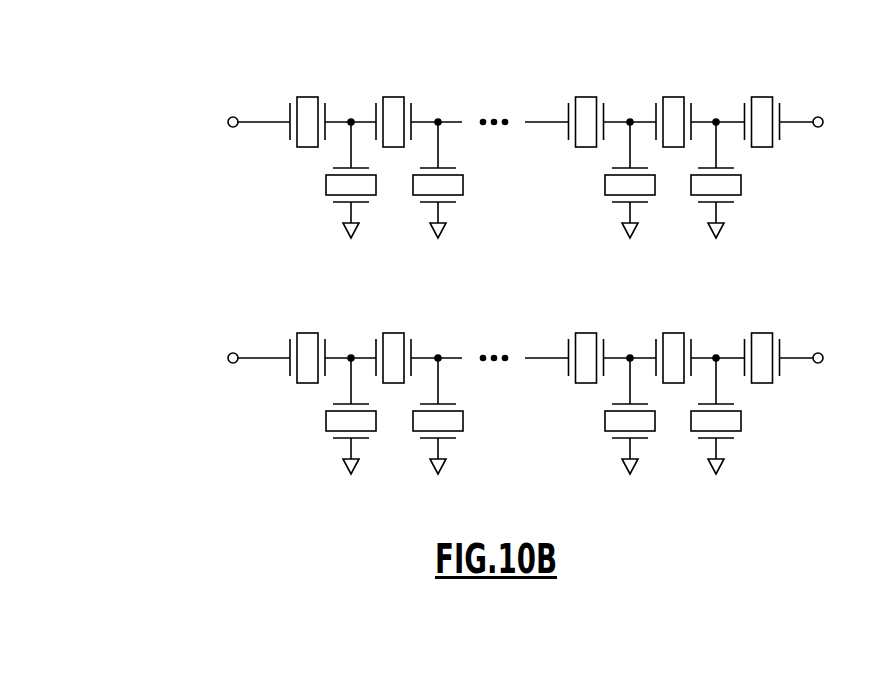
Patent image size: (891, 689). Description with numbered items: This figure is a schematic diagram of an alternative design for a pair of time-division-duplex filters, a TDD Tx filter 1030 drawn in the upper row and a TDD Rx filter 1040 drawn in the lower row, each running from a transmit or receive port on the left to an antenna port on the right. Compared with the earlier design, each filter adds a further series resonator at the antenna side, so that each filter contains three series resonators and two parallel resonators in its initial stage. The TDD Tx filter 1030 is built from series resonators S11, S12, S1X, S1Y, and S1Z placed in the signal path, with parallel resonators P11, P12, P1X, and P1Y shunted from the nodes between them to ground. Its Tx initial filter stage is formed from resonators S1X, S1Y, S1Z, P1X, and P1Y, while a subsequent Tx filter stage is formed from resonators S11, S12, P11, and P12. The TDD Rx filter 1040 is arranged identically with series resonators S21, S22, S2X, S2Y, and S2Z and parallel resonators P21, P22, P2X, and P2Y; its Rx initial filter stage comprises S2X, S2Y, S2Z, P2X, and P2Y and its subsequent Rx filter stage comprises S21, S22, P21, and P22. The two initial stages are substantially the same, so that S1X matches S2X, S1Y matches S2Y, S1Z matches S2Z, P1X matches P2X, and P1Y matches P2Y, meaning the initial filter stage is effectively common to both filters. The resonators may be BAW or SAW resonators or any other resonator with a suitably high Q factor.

The TDD Tx filter 1030 is at (470, 135).
The TDD Rx filter 1040 is at (470, 371).
The series resonator S11 is at (308, 105).
The series resonator S12 is at (393, 105).
The series resonator S1X is at (585, 105).
The series resonator S1Y is at (673, 105).
The series resonator S1Z is at (762, 105).
The series resonator S21 is at (308, 341).
The series resonator S22 is at (393, 341).
The series resonator S2X is at (585, 341).
The series resonator S2Y is at (673, 341).
The series resonator S2Z is at (762, 341).
The parallel resonator P11 is at (327, 178).
The parallel resonator P12 is at (463, 178).
The parallel resonator P1X is at (605, 178).
The parallel resonator P1Y is at (742, 178).
The parallel resonator P21 is at (327, 414).
The parallel resonator P22 is at (463, 414).
The parallel resonator P2X is at (605, 414).
The parallel resonator P2Y is at (742, 414).